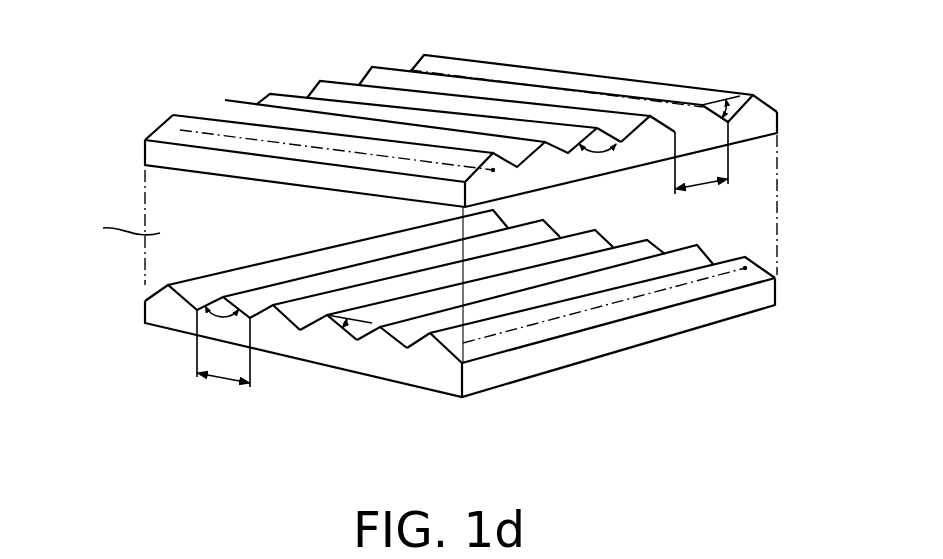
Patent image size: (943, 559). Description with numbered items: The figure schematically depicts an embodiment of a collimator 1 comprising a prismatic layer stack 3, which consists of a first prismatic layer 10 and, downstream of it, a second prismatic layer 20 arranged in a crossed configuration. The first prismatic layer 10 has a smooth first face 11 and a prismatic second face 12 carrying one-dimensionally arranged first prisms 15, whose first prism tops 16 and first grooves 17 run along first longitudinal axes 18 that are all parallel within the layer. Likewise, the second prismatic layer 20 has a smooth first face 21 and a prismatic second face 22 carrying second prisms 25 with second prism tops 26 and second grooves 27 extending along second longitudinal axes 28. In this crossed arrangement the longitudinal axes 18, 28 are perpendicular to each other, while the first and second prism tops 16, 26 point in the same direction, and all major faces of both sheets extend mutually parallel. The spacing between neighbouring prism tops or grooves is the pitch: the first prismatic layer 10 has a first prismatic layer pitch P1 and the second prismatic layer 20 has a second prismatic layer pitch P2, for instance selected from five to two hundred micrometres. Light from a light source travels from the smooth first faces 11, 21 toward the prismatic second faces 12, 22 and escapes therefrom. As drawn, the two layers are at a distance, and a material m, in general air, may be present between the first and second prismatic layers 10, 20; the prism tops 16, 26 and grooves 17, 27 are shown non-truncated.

The collimator 1 is at (82, 205).
The prismatic layer stack 3 is at (135, 252).
The material m is at (121, 228).
The first prismatic layer 10 is at (412, 326).
The first face 11 is at (275, 357).
The second face 12 is at (460, 326).
The first prisms 15 is at (215, 272).
The first prism tops 16 is at (329, 318).
The first grooves 17 is at (408, 350).
The first longitudinal axes 18 is at (550, 322).
The second prismatic layer 20 is at (451, 128).
The first face 21 is at (748, 142).
The second face 22 is at (360, 88).
The second prisms 25 is at (322, 85).
The second prism tops 26 is at (650, 115).
The second grooves 27 is at (568, 153).
The second longitudinal axes 28 is at (227, 137).
The first prismatic layer pitch P1 is at (227, 381).
The second prismatic layer pitch P2 is at (700, 188).